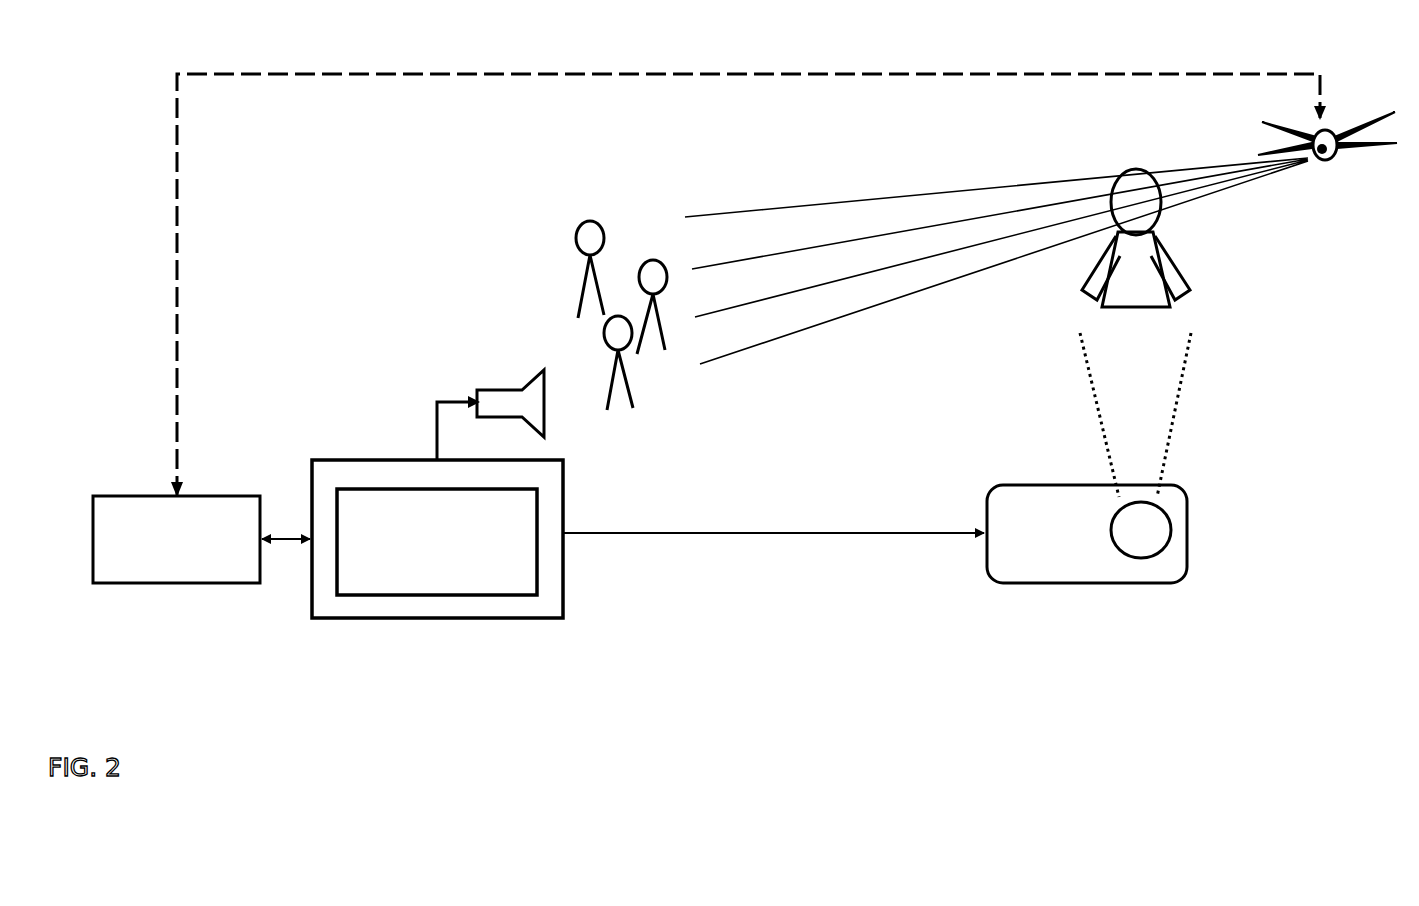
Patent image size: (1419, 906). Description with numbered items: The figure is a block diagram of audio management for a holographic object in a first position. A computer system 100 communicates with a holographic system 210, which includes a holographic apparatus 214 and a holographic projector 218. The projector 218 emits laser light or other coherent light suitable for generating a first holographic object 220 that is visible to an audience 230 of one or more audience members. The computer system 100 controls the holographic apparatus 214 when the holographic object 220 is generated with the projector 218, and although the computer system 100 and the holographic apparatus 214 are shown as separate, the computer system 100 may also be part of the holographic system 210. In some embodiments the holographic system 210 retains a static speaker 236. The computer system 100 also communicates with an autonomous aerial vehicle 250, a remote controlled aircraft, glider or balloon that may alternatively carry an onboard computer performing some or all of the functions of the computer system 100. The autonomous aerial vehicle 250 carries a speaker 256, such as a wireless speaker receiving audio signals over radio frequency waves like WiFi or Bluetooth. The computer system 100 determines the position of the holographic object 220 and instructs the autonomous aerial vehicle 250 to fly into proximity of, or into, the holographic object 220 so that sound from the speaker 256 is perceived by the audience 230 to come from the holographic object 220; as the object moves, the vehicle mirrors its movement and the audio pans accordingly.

The computer system 100 is at (218, 495).
The holographic system 210 is at (500, 619).
The holographic apparatus 214 is at (538, 558).
The holographic projector 218 is at (1027, 485).
The holographic object 220 is at (1152, 248).
The audience 230 is at (563, 218).
The static speaker 236 is at (503, 388).
The autonomous aerial vehicle 250 is at (1337, 128).
The speaker 256 is at (1333, 160).